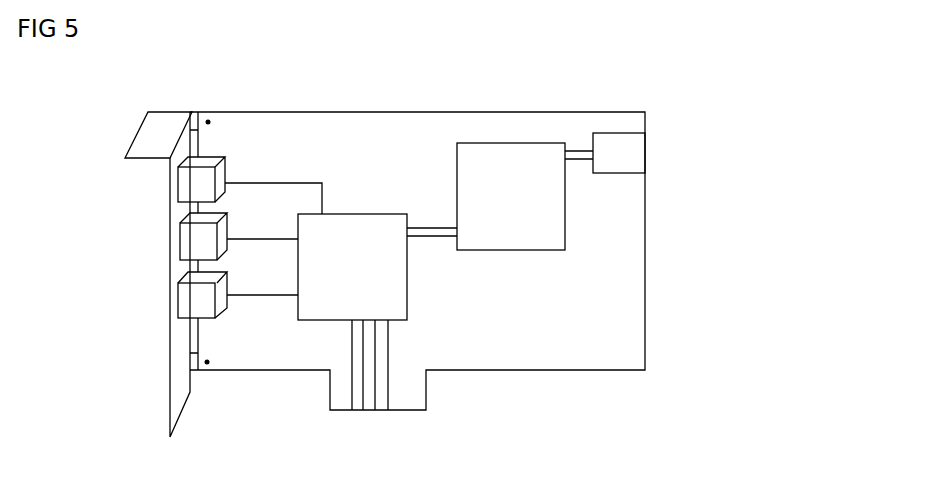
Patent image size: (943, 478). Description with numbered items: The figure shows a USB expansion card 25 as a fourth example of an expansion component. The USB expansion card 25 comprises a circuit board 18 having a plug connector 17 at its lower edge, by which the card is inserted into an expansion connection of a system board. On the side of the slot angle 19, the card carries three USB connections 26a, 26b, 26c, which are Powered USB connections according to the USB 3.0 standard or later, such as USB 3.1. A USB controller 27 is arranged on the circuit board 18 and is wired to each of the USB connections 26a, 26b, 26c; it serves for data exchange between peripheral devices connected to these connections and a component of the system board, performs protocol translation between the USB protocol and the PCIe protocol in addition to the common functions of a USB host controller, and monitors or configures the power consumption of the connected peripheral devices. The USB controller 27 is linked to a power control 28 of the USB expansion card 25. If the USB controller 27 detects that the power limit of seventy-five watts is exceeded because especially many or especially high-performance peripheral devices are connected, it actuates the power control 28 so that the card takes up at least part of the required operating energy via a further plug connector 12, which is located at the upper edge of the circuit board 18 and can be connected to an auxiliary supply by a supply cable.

The USB expansion card 25 is at (731, 43).
The slot angle 19 is at (158, 112).
The circuit board 18 is at (567, 360).
The plug connector 17 is at (417, 397).
The USB connection 26a is at (217, 153).
The USB connection 26b is at (225, 222).
The USB connection 26c is at (229, 274).
The USB controller 27 is at (367, 277).
The power control 28 is at (493, 213).
The plug connector 12 is at (608, 178).